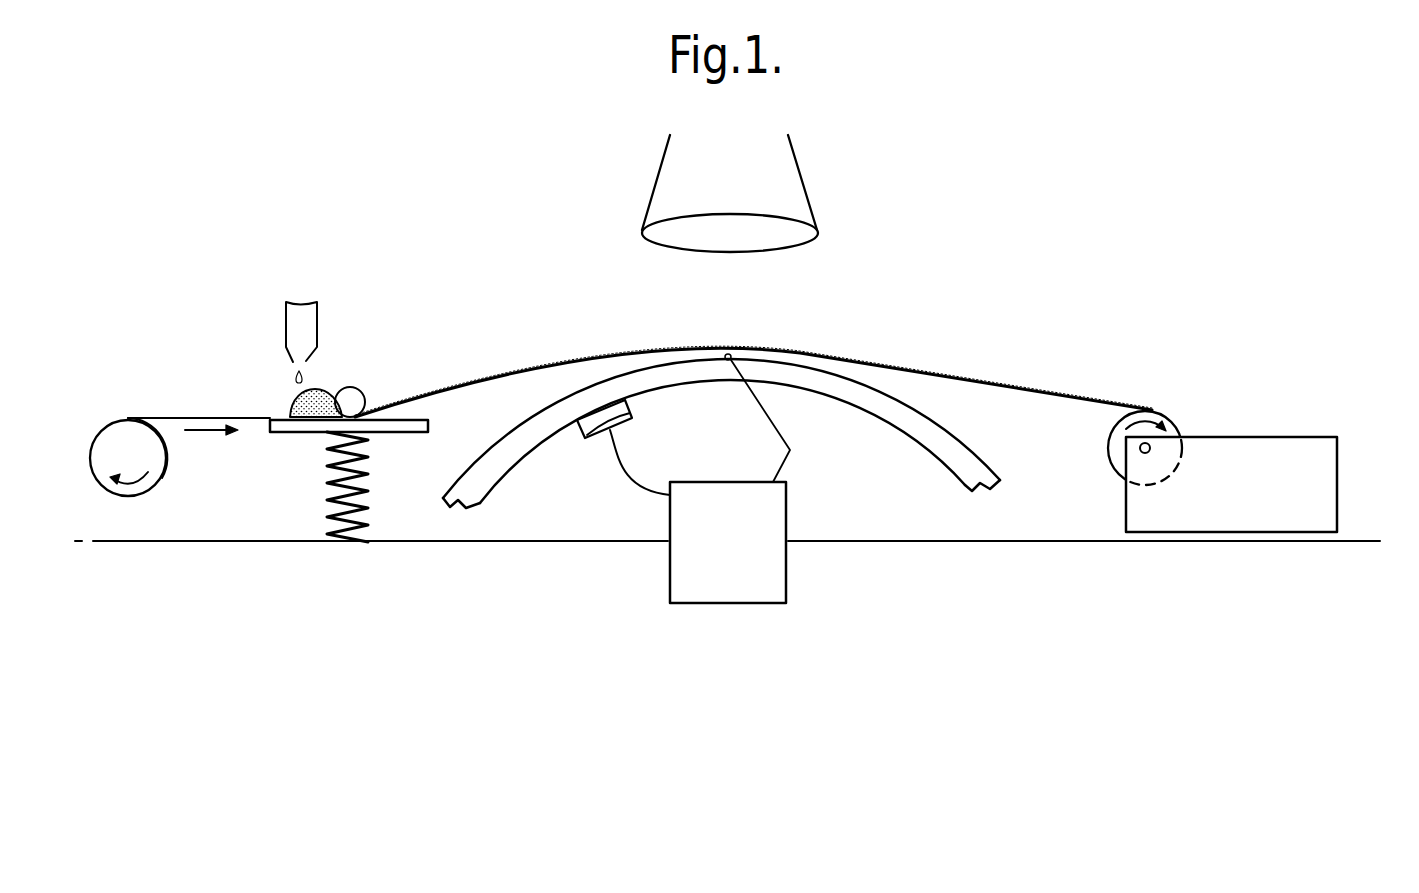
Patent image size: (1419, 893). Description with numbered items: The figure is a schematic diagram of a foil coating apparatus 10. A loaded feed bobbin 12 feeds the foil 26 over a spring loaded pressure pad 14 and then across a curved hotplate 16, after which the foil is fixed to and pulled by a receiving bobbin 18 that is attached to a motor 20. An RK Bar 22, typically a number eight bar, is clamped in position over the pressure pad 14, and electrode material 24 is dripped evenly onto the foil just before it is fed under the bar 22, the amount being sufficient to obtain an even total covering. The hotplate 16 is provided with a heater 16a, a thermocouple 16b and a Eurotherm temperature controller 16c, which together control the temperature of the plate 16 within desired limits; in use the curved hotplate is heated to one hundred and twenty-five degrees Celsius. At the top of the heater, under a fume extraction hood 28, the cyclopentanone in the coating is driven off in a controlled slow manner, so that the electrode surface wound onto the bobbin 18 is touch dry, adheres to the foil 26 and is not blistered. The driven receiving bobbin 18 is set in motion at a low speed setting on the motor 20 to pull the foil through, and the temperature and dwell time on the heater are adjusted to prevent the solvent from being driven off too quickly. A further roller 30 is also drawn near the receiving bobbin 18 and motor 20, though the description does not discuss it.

The foil coating apparatus 10 is at (997, 348).
The loaded feed bobbin 12 is at (150, 462).
The spring loaded pressure pad 14 is at (396, 430).
The curved hotplate 16 is at (812, 390).
The heater 16a is at (595, 440).
The thermocouple 16b is at (741, 352).
The Eurotherm temperature controller 16c is at (753, 553).
The receiving bobbin 18 is at (1174, 430).
The motor 20 is at (1300, 460).
The RK Bar 22 is at (352, 398).
The electrode material 24 is at (295, 400).
The foil 26 is at (195, 417).
The fume extraction hood 28 is at (665, 152).
The roller 30 is at (1153, 410).